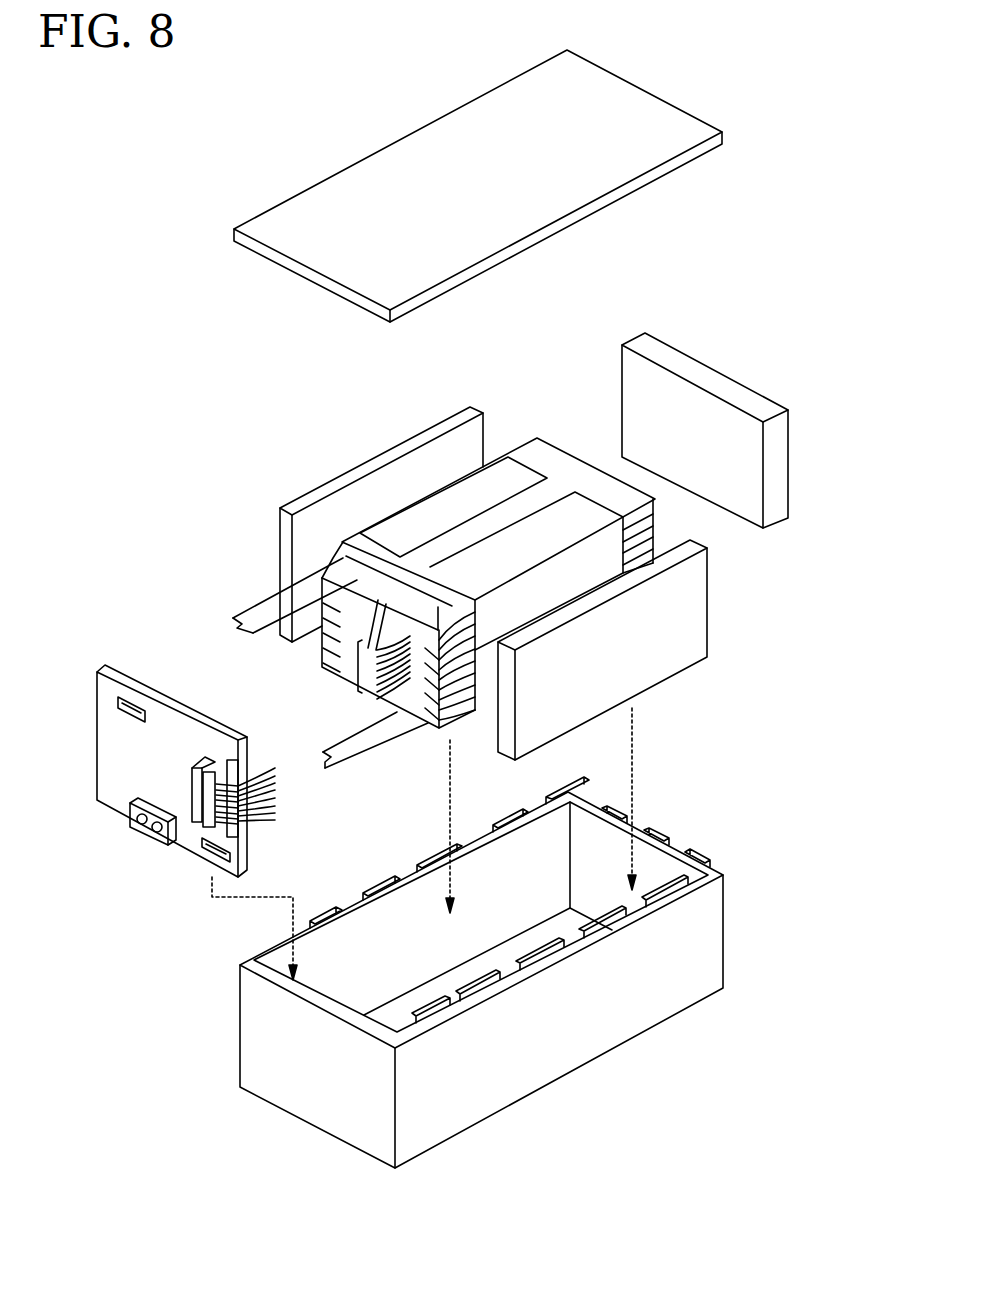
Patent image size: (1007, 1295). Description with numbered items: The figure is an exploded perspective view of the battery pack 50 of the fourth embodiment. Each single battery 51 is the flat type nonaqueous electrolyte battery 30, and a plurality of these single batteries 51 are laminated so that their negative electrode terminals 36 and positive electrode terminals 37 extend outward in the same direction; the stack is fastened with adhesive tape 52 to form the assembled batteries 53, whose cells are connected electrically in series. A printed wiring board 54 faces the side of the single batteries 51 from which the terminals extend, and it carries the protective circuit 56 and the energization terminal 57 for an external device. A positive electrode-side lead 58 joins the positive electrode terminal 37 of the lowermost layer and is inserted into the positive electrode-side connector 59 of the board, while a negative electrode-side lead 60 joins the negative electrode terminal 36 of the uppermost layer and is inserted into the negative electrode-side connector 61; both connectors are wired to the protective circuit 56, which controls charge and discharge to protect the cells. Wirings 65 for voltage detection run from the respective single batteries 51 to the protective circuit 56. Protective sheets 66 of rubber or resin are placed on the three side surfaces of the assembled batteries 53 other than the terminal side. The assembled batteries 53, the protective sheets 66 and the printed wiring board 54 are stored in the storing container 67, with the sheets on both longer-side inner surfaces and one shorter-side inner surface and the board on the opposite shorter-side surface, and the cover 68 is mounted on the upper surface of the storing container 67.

The battery pack 50 is at (160, 322).
The single battery 51 is at (628, 609).
The flat type nonaqueous electrolyte battery 30 is at (656, 553).
The adhesive tape 52 is at (563, 522).
The assembled batteries 53 is at (437, 490).
The printed wiring board 54 is at (127, 662).
The protective circuit 56 is at (207, 758).
The energization terminal 57 is at (148, 836).
The positive electrode-side lead 58 is at (366, 752).
The positive electrode-side connector 59 is at (226, 858).
The negative electrode-side lead 60 is at (248, 608).
The negative electrode-side connector 61 is at (135, 708).
The wirings for voltage detection 65 is at (360, 667).
The protective sheet 66 is at (344, 487).
The storing container 67 is at (710, 943).
The cover 68 is at (666, 123).
The negative electrode terminal 36 is at (330, 560).
The positive electrode terminal 37 is at (410, 620).